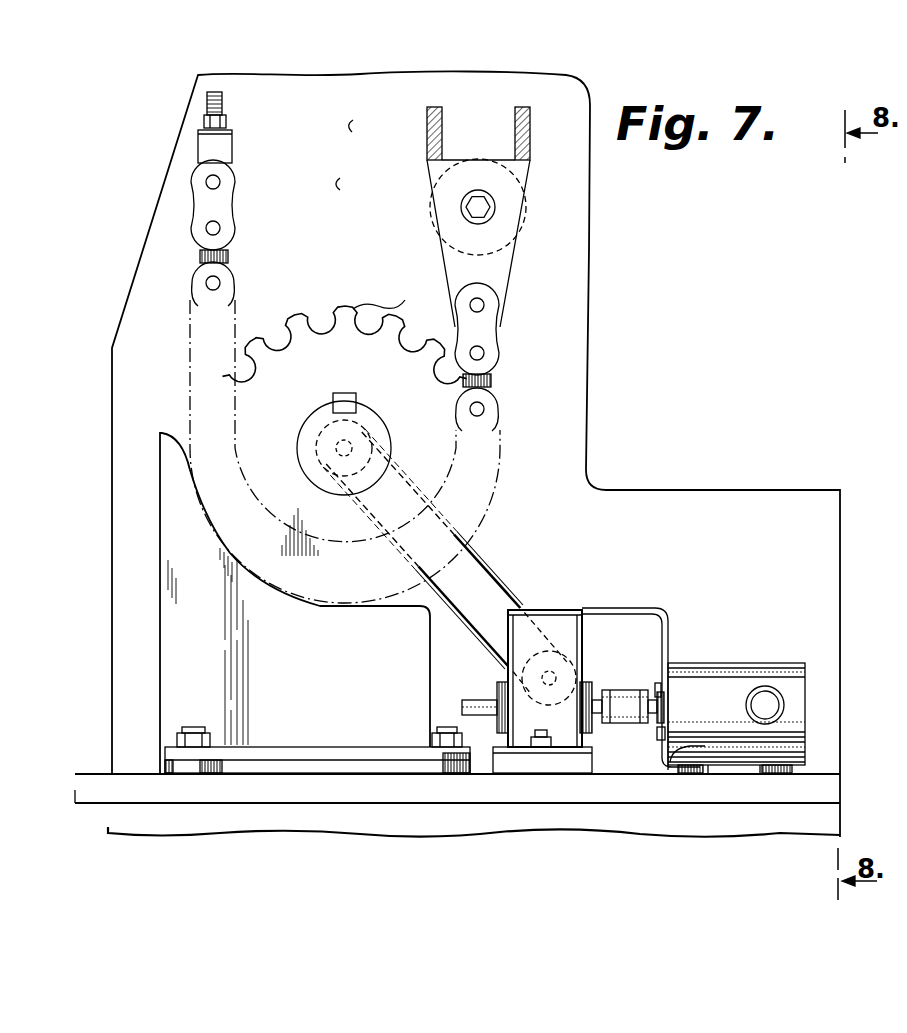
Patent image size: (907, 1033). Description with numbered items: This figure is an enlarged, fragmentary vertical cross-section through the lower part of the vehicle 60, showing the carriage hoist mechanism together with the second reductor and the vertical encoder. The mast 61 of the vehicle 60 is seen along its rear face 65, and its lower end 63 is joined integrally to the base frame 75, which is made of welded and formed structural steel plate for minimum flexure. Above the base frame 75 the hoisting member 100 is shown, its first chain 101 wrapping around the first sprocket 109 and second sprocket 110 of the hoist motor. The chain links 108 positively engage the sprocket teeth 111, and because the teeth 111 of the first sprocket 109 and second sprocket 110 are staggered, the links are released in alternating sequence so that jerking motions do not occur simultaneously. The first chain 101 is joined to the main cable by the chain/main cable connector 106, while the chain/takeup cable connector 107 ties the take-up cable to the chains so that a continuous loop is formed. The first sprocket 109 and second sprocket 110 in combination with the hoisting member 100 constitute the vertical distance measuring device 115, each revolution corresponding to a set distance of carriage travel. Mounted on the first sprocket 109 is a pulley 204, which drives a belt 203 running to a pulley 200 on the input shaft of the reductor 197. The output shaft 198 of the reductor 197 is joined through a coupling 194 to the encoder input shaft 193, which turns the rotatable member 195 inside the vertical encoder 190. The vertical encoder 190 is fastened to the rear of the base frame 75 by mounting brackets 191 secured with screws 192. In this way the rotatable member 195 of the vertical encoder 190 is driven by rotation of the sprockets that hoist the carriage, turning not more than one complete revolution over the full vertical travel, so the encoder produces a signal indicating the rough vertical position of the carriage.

The rear face 65 is at (368, 84).
The mast 61 is at (363, 125).
The lower end 63 is at (351, 181).
The chain/takeup cable connector 107 is at (233, 157).
The chain links 108 is at (238, 198).
The first chain 101 is at (192, 242).
The hoisting member 100 is at (236, 275).
The first sprocket 109 is at (321, 310).
The sprocket teeth 111 is at (384, 294).
The second sprocket 110 is at (345, 400).
The pulley 204 is at (363, 430).
The chain/main cable connector 106 is at (521, 252).
The vertical distance measuring device 115 is at (500, 411).
The belt 203 is at (494, 571).
The pulley 200 is at (500, 676).
The reductor 197 is at (590, 612).
The output shaft 198 is at (601, 690).
The coupling 194 is at (627, 690).
The encoder input shaft 193 is at (668, 692).
The screws 192 is at (660, 740).
The mounting brackets 191 is at (668, 612).
The rotatable member 195 is at (668, 766).
The vertical encoder 190 is at (810, 663).
The vehicle 60 is at (843, 822).
The base frame 75 is at (107, 826).